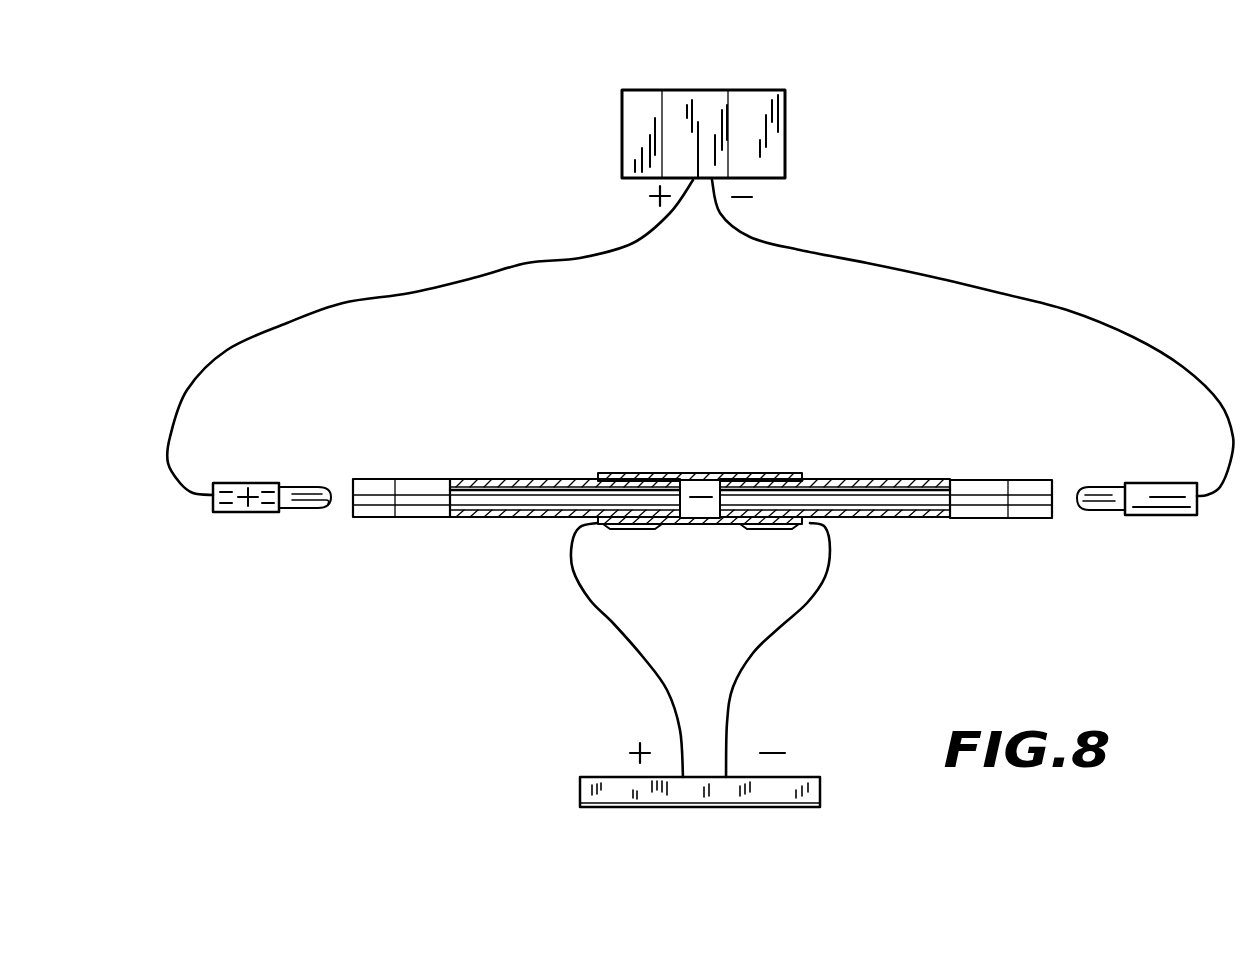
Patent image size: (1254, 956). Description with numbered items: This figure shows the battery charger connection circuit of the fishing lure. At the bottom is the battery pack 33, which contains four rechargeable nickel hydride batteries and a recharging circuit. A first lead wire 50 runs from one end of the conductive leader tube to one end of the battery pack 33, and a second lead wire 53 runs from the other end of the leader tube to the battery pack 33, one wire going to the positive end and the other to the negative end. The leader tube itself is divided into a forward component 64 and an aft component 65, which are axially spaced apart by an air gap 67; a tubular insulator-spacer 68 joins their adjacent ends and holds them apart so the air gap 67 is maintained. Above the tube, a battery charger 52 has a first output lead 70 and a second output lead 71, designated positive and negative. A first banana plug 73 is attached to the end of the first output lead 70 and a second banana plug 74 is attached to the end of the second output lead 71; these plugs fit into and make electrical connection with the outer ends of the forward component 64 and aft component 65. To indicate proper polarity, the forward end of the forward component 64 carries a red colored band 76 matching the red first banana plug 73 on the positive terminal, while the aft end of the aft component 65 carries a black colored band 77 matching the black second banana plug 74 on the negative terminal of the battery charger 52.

The battery pack 33 is at (608, 777).
The first lead wire 50 is at (590, 603).
The battery charger 52 is at (786, 143).
The second lead wire 53 is at (810, 603).
The forward component 64 is at (487, 480).
The aft component 65 is at (876, 480).
The air gap 67 is at (703, 510).
The tubular insulator-spacer 68 is at (652, 474).
The first output lead 70 is at (490, 277).
The second output lead 71 is at (1020, 295).
The first banana plug 73 is at (250, 513).
The second banana plug 74 is at (1158, 516).
The red colored band 76 is at (368, 518).
The black colored band 77 is at (1032, 481).